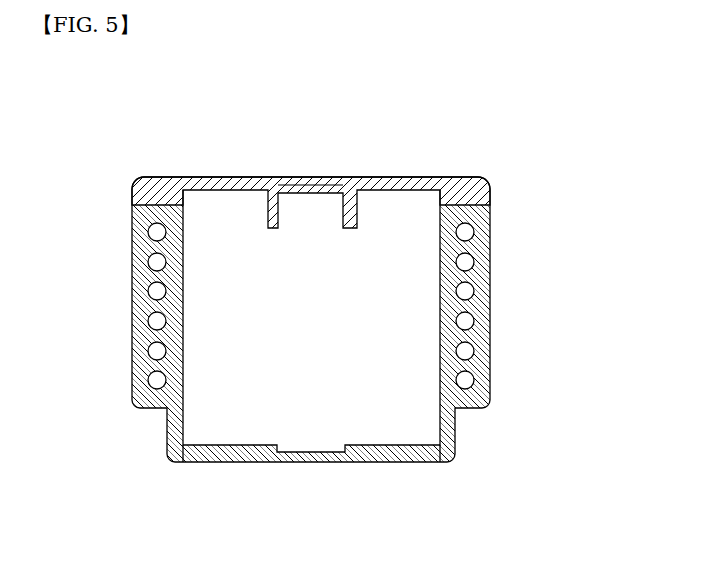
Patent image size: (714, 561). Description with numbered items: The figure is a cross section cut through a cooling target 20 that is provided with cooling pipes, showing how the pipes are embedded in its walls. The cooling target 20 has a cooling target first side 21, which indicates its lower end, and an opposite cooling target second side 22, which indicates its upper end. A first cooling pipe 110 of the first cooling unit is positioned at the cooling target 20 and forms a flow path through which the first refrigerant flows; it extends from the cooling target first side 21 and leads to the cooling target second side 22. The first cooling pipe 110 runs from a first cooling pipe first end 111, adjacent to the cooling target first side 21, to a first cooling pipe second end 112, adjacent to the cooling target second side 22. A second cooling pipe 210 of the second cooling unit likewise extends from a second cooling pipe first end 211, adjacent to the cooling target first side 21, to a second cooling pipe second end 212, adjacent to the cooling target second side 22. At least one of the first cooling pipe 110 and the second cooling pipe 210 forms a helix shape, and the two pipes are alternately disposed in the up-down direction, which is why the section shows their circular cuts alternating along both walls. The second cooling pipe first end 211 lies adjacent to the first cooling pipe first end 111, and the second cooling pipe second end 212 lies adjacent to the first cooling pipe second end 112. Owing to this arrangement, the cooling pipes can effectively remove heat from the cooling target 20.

The cooling target 20 is at (457, 436).
The cooling target first side 21 is at (390, 463).
The cooling target second side 22 is at (393, 178).
The first cooling pipe 110 is at (157, 262).
The first cooling pipe first end 111 is at (157, 380).
The first cooling pipe second end 112 is at (465, 232).
The second cooling pipe 210 is at (157, 291).
The second cooling pipe first end 211 is at (465, 380).
The second cooling pipe second end 212 is at (157, 232).